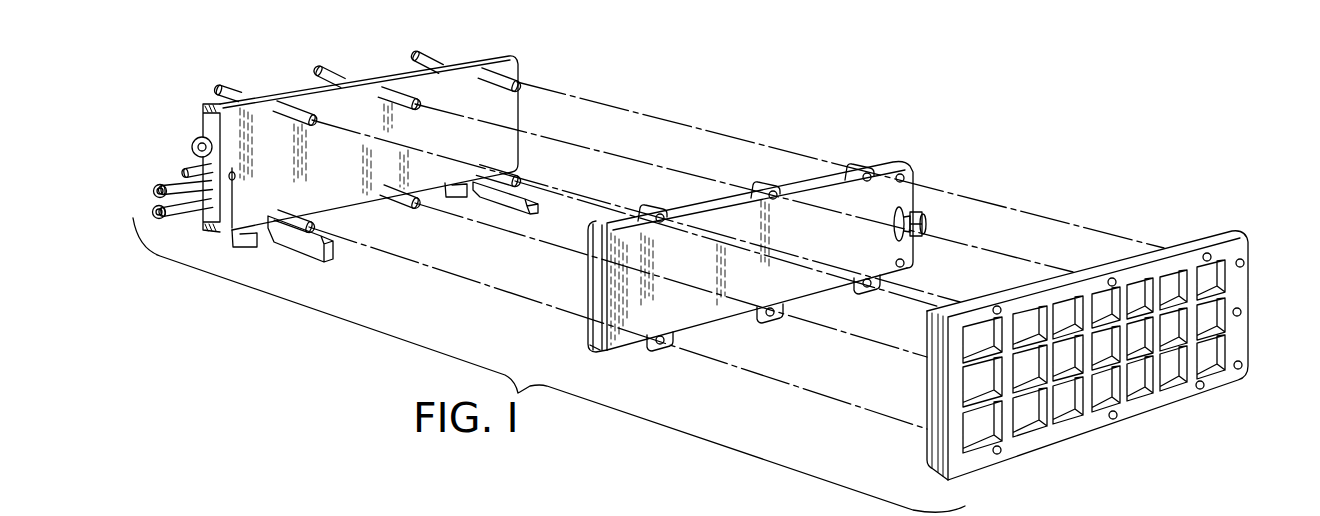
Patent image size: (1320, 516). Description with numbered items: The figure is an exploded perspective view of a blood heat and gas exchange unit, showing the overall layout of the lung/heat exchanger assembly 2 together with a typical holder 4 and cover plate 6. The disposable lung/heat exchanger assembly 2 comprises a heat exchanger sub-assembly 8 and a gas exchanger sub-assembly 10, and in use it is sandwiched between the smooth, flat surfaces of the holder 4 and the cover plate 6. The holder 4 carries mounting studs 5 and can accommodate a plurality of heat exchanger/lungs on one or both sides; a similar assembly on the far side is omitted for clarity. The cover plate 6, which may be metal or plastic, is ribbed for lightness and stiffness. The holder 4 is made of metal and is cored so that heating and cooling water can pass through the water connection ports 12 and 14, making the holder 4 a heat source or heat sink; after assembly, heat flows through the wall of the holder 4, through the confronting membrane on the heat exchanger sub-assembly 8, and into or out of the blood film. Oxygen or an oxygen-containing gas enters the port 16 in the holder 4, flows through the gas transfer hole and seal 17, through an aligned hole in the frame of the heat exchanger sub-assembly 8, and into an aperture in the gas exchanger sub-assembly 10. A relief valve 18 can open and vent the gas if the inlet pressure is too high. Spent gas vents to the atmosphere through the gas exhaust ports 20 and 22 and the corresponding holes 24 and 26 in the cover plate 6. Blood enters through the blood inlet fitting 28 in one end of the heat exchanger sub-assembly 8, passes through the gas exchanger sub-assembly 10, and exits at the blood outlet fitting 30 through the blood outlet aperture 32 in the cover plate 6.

The lung/heat exchanger assembly 2 is at (903, 158).
The holder 4 is at (514, 62).
The mounting studs 5 is at (292, 107).
The cover plate 6 is at (1236, 231).
The heat exchanger sub-assembly 8 is at (589, 330).
The gas exchanger sub-assembly 10 is at (604, 340).
The water connection port 12 is at (154, 189).
The water connection port 14 is at (153, 212).
The port 16 is at (189, 170).
The gas transfer hole and seal 17 is at (231, 226).
The relief valve 18 is at (199, 137).
The gas exhaust port 20 is at (908, 180).
The gas exhaust port 22 is at (905, 263).
The hole 24 is at (1244, 263).
The hole 26 is at (1242, 366).
The blood inlet fitting 28 is at (927, 212).
The blood outlet fitting 30 is at (924, 229).
The blood outlet aperture 32 is at (1241, 312).